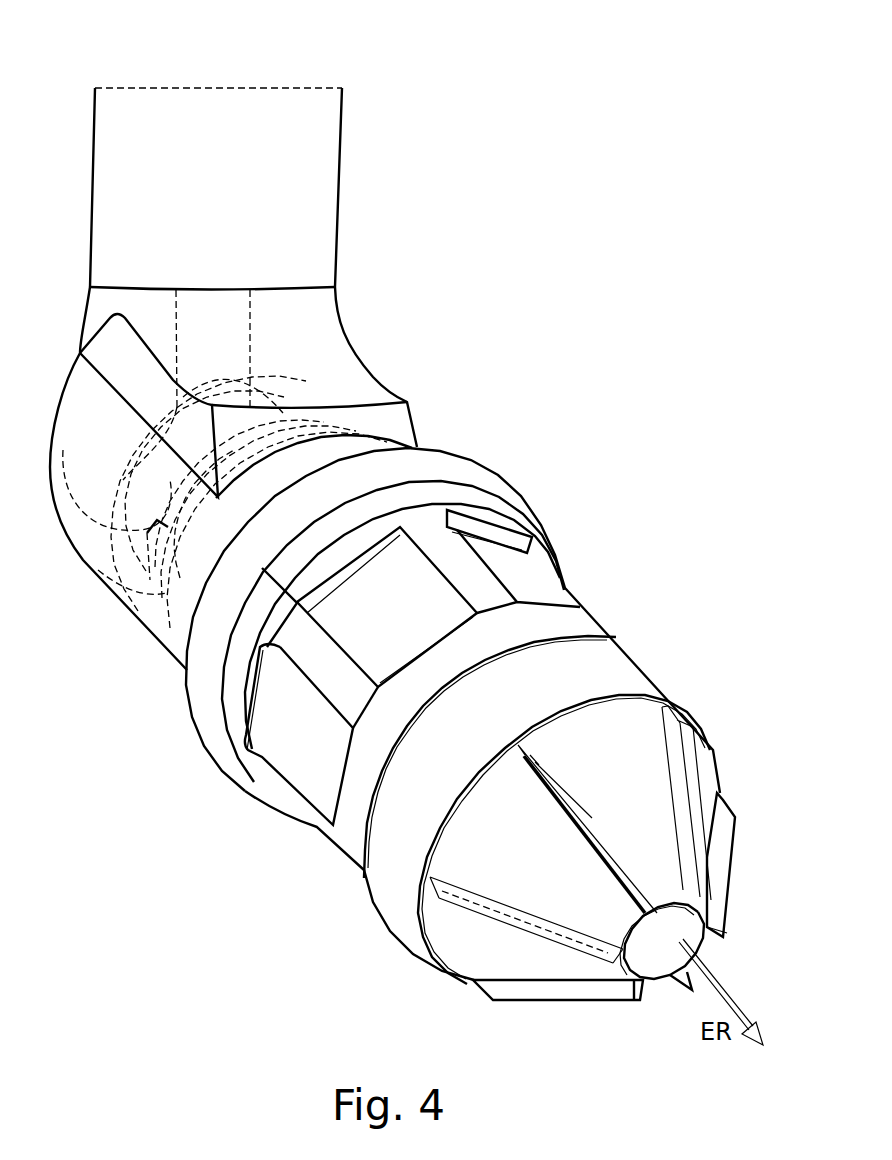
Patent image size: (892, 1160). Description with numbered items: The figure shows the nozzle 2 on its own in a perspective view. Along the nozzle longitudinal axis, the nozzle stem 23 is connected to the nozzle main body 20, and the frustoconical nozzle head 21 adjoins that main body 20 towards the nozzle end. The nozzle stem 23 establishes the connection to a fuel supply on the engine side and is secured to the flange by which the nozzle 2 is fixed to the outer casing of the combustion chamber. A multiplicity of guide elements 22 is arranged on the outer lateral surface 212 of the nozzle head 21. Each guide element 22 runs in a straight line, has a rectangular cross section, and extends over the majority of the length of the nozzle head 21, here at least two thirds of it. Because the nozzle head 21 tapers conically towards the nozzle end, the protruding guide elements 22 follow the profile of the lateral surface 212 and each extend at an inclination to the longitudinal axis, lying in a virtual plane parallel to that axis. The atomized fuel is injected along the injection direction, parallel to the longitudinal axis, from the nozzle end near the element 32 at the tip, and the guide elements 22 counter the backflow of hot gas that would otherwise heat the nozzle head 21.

The nozzle 2 is at (618, 467).
The nozzle main body 20 is at (220, 668).
The nozzle head 21 is at (632, 687).
The guide element 22 is at (690, 760).
The nozzle stem 23 is at (284, 110).
The hub 32 is at (545, 920).
The lateral surface 212 is at (482, 952).